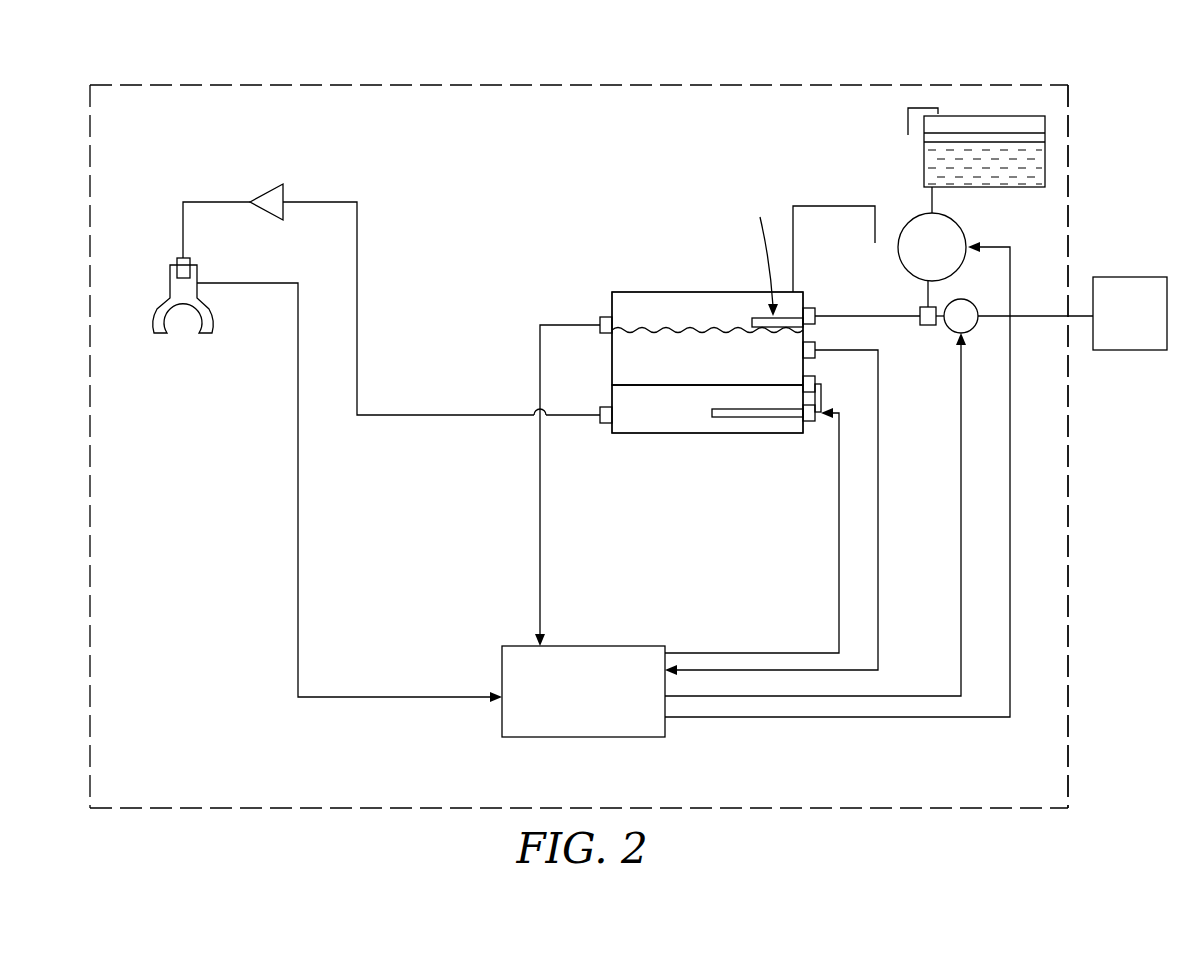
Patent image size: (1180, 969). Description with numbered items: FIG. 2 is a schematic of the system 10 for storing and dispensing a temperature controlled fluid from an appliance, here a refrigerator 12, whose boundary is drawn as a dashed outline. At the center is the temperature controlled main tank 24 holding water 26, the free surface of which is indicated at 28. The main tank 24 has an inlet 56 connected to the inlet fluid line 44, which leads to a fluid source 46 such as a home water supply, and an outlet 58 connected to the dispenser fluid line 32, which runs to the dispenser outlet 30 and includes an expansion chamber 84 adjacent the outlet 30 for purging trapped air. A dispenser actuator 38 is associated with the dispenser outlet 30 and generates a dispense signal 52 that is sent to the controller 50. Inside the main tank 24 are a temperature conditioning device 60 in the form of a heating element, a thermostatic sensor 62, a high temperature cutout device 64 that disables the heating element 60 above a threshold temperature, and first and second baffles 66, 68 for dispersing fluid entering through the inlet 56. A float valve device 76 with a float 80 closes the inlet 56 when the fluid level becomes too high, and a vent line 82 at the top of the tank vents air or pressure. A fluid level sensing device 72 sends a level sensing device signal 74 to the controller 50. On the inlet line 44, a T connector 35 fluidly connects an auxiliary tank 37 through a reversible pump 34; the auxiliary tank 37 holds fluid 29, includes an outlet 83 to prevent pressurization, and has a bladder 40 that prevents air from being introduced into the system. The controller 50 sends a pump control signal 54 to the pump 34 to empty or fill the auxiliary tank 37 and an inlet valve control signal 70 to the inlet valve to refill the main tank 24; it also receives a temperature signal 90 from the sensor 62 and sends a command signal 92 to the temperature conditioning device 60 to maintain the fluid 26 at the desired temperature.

The system for storing and dispensing a fluid 10 is at (728, 163).
The refrigerator 12 is at (758, 808).
The temperature controlled main tank 24 is at (672, 435).
The water 26 is at (683, 350).
The liquid level 28 is at (795, 322).
The fluid 29 is at (1068, 205).
The dispenser outlet 30 is at (186, 262).
The dispenser fluid line 32 is at (358, 270).
The reversible pump 34 is at (932, 234).
The T connector 35 is at (918, 312).
The auxiliary tank 37 is at (1004, 117).
The dispenser actuator 38 is at (208, 333).
The bladder 40 is at (1020, 140).
The inlet fluid line 44 is at (895, 328).
The fluid source 46 is at (1130, 313).
The controller 50 is at (583, 691).
The dispense signal 52 is at (299, 548).
The pump control signal 54 is at (1010, 440).
The inlet 56 is at (812, 309).
The outlet 58 is at (604, 422).
The temperature conditioning device 60 is at (778, 418).
The thermostatic sensor 62 is at (800, 344).
The high temperature cutout device 64 is at (815, 384).
The first baffle 66 is at (672, 385).
The second baffle 68 is at (655, 328).
The inlet valve control signal 70 is at (960, 695).
The fluid level sensing device 72 is at (600, 330).
The level sensing device signal 74 is at (541, 578).
The float valve device 76 is at (757, 251).
The float 80 is at (773, 318).
The vent line 82 is at (876, 222).
The outlet 83 is at (938, 108).
The expansion chamber 84 is at (262, 193).
The temperature signal 90 is at (880, 508).
The command signal 92 is at (838, 573).